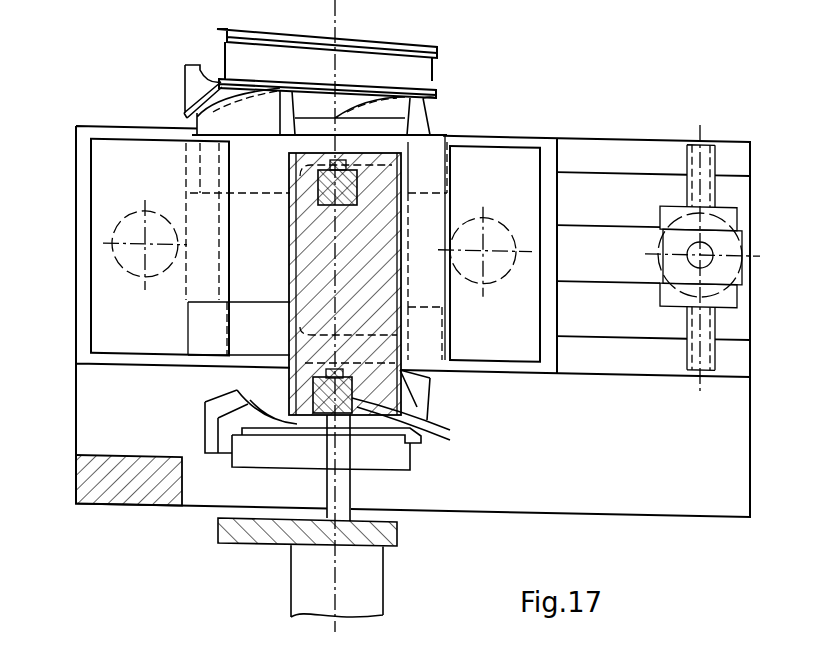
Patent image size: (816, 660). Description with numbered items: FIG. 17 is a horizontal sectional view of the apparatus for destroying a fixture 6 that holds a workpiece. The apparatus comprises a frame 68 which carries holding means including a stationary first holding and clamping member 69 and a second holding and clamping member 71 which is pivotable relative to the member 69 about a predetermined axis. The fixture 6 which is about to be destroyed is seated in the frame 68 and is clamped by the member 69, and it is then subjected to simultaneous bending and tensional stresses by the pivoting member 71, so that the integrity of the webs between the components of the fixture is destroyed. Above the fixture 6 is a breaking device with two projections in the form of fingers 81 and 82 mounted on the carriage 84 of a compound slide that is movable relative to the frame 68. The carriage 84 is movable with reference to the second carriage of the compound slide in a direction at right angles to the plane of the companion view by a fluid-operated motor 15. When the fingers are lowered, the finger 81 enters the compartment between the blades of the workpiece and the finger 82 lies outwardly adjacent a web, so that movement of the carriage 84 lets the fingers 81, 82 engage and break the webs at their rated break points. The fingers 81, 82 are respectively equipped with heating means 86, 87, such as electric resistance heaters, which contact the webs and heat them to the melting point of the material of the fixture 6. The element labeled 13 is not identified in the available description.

The fixture 6 is at (245, 341).
The spindle 13 is at (357, 176).
The fluid-operated motor 15 is at (373, 590).
The frame 68 is at (103, 452).
The stationary first holding and clamping member 69 is at (100, 184).
The second holding and clamping member 71 is at (508, 155).
The finger 81 is at (322, 380).
The finger 82 is at (360, 181).
The carriage 84 is at (330, 400).
The heating means 86 is at (338, 368).
The heating means 87 is at (341, 166).